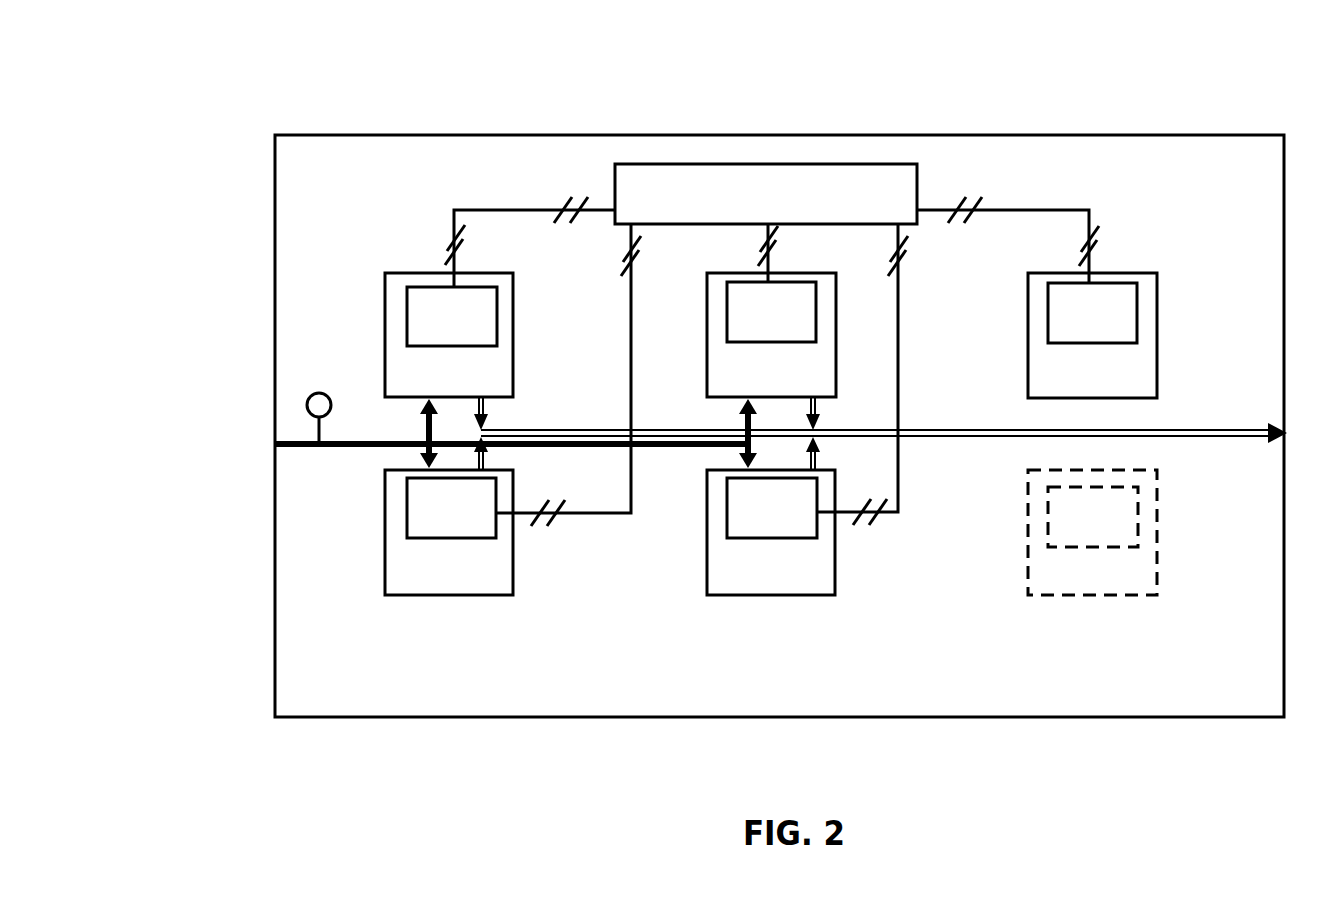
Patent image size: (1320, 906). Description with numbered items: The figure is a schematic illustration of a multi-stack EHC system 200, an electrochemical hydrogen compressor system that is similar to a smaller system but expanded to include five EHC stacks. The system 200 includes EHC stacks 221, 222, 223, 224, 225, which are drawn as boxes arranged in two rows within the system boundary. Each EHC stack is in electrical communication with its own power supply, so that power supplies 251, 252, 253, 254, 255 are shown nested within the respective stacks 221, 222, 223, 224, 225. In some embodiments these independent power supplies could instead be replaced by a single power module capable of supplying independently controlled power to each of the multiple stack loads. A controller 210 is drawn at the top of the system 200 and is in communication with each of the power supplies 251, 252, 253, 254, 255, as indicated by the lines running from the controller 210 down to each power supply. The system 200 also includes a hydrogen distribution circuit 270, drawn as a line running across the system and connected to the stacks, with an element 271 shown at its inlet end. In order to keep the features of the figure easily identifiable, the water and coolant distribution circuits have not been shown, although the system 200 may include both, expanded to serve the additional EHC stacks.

The multi-stack EHC system 200 is at (950, 135).
The controller 210 is at (745, 209).
The EHC stack 221 is at (431, 377).
The EHC stack 222 is at (750, 377).
The EHC stack 223 is at (1072, 378).
The EHC stack 224 is at (431, 574).
The EHC stack 225 is at (750, 574).
The power supply 251 is at (431, 329).
The power supply 252 is at (750, 326).
The power supply 253 is at (1072, 326).
The power supply 254 is at (431, 522).
The power supply 255 is at (750, 522).
The hydrogen distribution circuit 270 is at (340, 448).
The bus terminator 271 is at (307, 408).